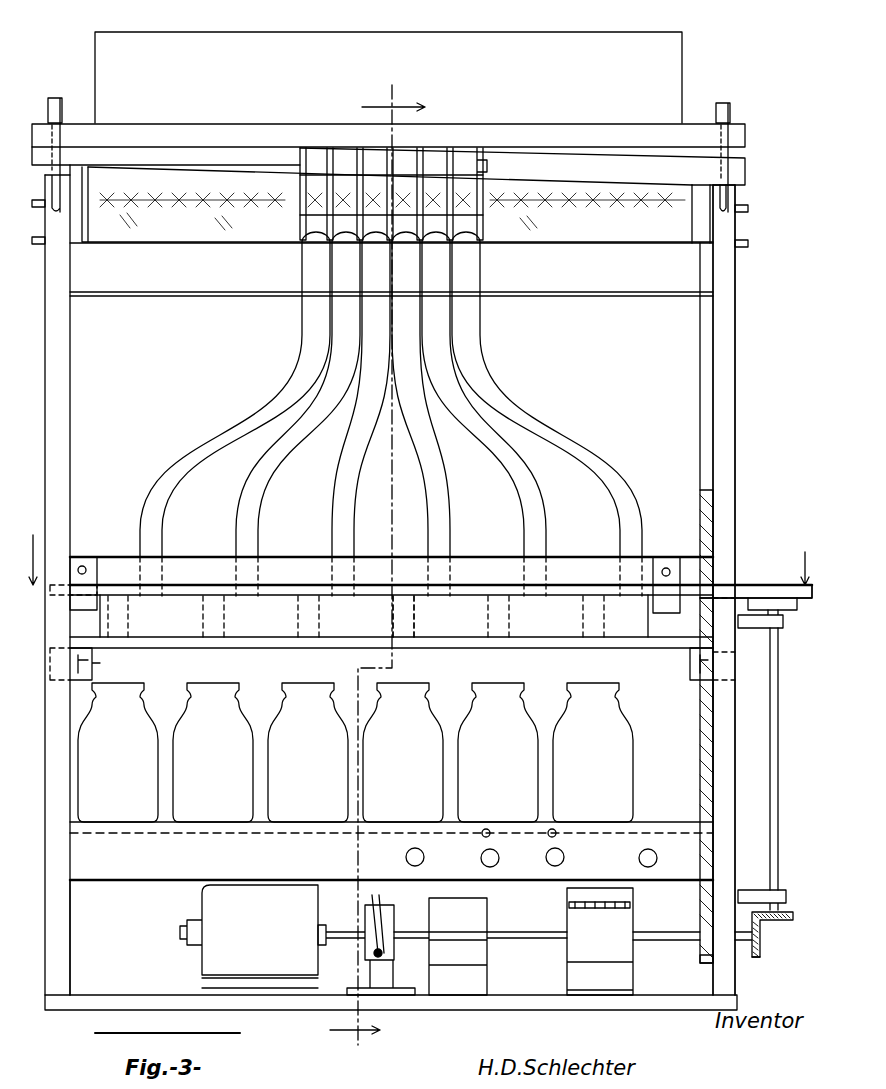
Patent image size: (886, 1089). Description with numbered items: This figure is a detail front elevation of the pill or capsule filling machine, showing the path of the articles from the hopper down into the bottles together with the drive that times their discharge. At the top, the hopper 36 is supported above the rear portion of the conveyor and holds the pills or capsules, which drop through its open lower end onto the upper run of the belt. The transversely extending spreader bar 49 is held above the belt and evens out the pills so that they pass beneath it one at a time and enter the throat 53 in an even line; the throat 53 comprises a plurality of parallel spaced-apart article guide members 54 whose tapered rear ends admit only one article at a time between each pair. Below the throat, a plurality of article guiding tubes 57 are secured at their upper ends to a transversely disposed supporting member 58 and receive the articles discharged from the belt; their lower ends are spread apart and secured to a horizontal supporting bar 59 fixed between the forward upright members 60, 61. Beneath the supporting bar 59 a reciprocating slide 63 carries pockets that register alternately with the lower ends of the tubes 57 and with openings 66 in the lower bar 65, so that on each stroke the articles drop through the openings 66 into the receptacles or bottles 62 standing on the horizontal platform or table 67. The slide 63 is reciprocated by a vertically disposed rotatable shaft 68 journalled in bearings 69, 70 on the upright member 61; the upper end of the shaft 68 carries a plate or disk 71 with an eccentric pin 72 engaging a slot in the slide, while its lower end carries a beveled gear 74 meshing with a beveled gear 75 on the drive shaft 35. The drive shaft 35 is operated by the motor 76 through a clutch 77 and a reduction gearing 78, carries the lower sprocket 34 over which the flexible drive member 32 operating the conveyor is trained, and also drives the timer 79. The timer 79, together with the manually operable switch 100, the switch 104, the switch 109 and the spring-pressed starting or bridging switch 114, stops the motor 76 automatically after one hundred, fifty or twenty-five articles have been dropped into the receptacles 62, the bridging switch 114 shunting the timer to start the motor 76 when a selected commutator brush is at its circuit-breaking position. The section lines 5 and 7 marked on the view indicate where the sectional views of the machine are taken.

The hopper 36 is at (620, 50).
The section line 5 is at (377, 569).
The section line 7 is at (417, 547).
The spreader bar 49 is at (668, 168).
The throat 53 is at (500, 163).
The article guide members 54 is at (452, 160).
The supporting member 58 is at (627, 280).
The article guiding tubes 57 is at (467, 338).
The supporting bar 59 is at (586, 557).
The reciprocating slide 63 is at (555, 596).
The lower bar 65 is at (636, 622).
The openings 66 is at (425, 628).
The eccentric pin 72 is at (790, 585).
The plate or disk 71 is at (758, 598).
The bearing 69 is at (785, 625).
The rotatable shaft 68 is at (779, 790).
The bearing 70 is at (786, 890).
The beveled gear 74 is at (793, 918).
The beveled gear 75 is at (762, 950).
The forward upright member 61 is at (730, 976).
The receptacles or bottles 62 is at (485, 745).
The platform or table 67 is at (574, 828).
The flexible drive member 32 is at (700, 791).
The starting or bridging switch 114 is at (405, 858).
The switch 109 is at (498, 862).
The switch 104 is at (563, 860).
The manually operable switch 100 is at (657, 859).
The motor 76 is at (210, 900).
The clutch 77 is at (388, 918).
The reduction gearing 78 is at (478, 917).
The timer 79 is at (567, 958).
The drive shaft 35 is at (665, 935).
The lower sprocket 34 is at (700, 960).
The forward upright member 60 is at (65, 967).